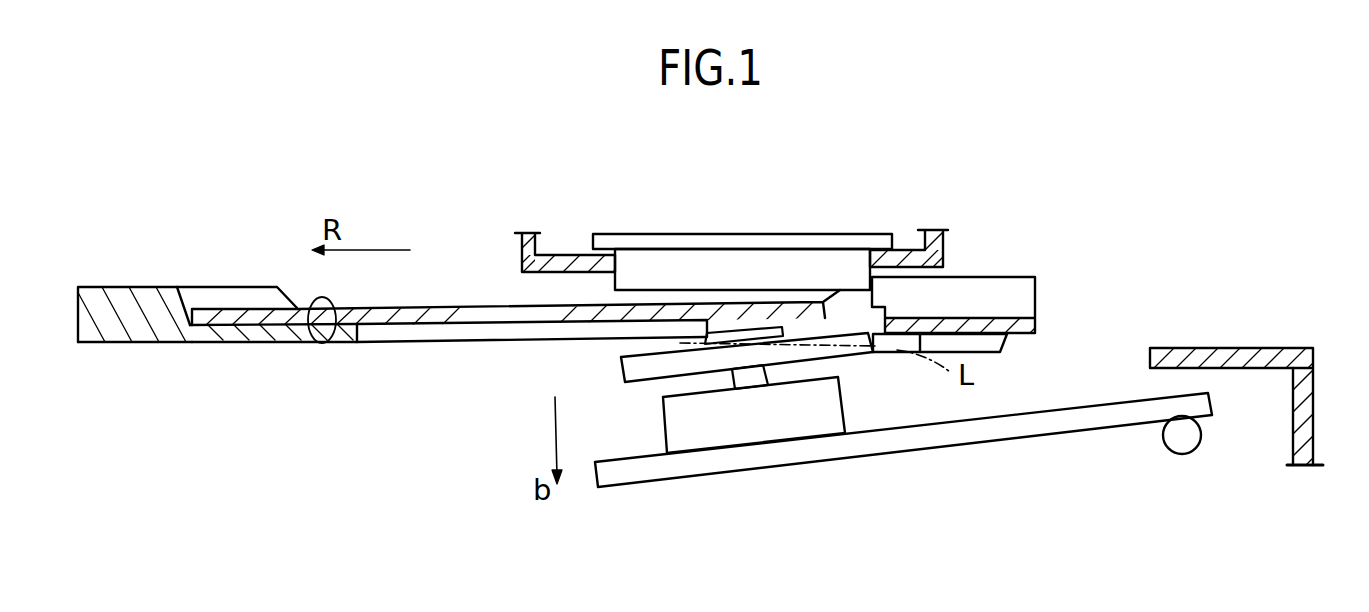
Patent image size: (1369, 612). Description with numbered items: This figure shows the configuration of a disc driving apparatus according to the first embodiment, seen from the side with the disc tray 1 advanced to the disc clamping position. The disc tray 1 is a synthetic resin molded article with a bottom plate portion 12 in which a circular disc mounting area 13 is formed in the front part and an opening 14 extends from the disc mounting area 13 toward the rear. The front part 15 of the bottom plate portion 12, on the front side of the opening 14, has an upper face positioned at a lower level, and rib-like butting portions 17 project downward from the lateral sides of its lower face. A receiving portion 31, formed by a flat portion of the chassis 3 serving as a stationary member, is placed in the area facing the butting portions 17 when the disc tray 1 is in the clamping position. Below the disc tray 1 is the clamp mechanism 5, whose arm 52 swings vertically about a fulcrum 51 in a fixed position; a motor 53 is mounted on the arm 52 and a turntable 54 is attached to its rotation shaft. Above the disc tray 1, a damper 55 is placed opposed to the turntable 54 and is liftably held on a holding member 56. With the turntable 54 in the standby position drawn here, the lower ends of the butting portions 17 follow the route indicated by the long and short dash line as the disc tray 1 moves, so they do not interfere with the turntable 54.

The disc tray 1 is at (138, 285).
The bottom plate portion 12 is at (280, 343).
The disc mounting area 13 is at (322, 343).
The opening 14 is at (437, 332).
The front part of bottom plate portion 15 is at (1035, 325).
The butting portion 17 is at (1000, 345).
The chassis 3 is at (1313, 405).
The receiving portion 31 is at (1243, 347).
The clamp mechanism 5 is at (704, 492).
The fulcrum 51 is at (1178, 455).
The arm 52 is at (937, 447).
The motor 53 is at (845, 412).
The turntable 54 is at (637, 370).
The damper 55 is at (817, 257).
The holding member 56 is at (943, 240).